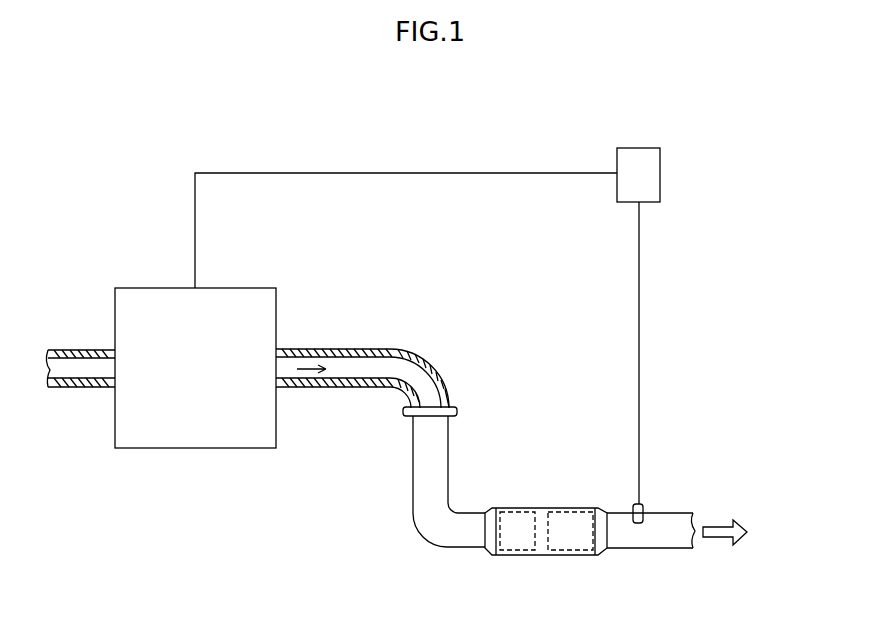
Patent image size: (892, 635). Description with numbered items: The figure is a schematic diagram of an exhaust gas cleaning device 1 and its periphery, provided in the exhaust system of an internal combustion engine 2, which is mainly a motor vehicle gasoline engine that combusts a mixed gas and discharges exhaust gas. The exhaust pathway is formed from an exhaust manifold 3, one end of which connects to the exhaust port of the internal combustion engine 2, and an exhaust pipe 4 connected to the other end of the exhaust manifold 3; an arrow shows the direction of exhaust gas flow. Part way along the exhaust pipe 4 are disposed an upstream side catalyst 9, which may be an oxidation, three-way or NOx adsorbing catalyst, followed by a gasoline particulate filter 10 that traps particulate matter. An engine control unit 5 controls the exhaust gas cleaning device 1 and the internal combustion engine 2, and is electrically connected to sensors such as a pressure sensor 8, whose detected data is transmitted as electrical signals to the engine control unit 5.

The exhaust gas cleaning device 1 is at (781, 162).
The internal combustion engine 2 is at (158, 452).
The exhaust manifold 3 is at (368, 347).
The exhaust pipe 4 is at (412, 459).
The engine control unit (ECU) 5 is at (660, 163).
The pressure sensor 8 is at (638, 523).
The upstream side catalyst 9 is at (520, 505).
The gasoline particulate filter (GPF) 10 is at (575, 505).